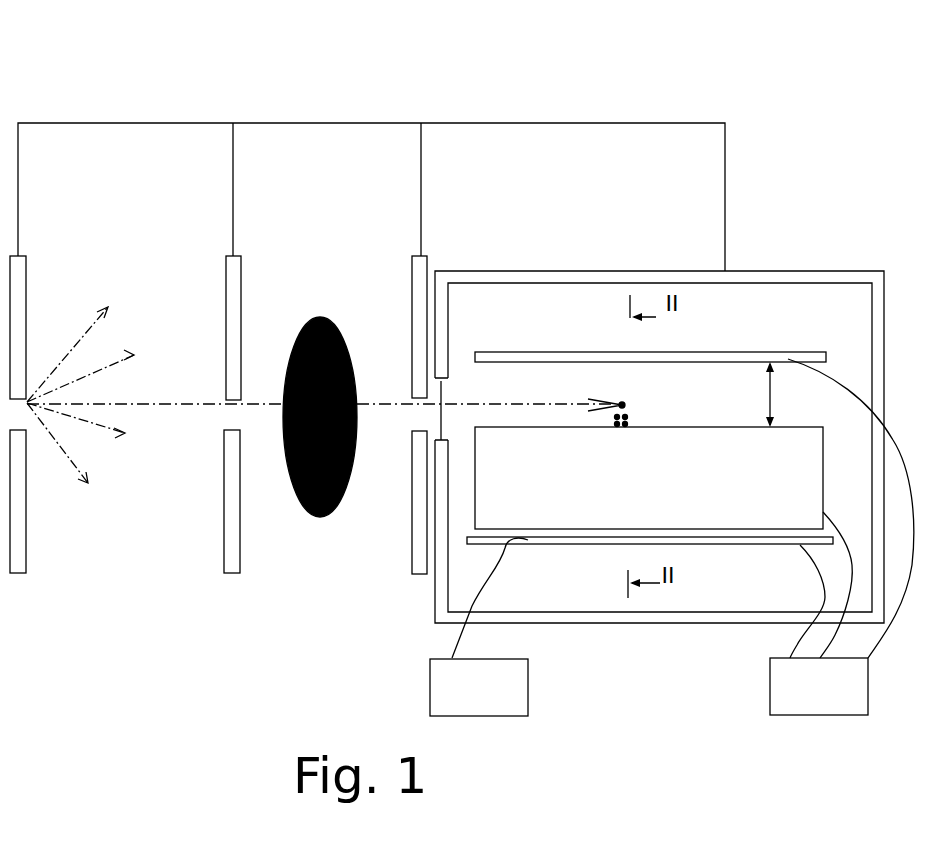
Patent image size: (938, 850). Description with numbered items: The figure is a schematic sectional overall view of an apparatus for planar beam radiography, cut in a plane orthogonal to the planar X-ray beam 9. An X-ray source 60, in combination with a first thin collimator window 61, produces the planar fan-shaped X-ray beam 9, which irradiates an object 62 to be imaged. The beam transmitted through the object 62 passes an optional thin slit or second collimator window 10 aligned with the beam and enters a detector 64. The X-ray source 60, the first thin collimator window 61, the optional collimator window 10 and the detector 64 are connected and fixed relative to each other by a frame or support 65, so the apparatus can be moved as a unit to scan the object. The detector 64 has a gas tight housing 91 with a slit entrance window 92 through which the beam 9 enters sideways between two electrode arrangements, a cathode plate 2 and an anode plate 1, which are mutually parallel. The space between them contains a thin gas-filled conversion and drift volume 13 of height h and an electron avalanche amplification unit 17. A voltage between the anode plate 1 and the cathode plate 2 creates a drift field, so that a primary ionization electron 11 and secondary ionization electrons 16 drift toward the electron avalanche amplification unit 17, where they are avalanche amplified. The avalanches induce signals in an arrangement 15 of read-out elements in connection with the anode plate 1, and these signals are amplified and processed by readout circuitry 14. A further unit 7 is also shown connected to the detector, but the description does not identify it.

The frame or support 65 is at (106, 123).
The X-ray source 60 is at (30, 417).
The planar X-ray beam 9 is at (143, 401).
The first thin collimator window 61 is at (243, 400).
The object 62 is at (335, 507).
The second collimator window 10 is at (414, 412).
The gas tight housing 91 is at (742, 271).
The slit entrance window 92 is at (440, 390).
The conversion and drift volume 13 is at (650, 371).
The cathode plate 2 is at (790, 359).
The primary ionization electron 11 is at (624, 405).
The secondary ionization electrons 16 is at (630, 418).
The electron avalanche amplification unit 17 is at (797, 432).
The anode plate 1 is at (583, 538).
The arrangement of read-out elements 15 is at (693, 543).
The readout circuitry 14 is at (479, 627).
The control unit 7 is at (819, 686).
The detector 64 is at (674, 664).